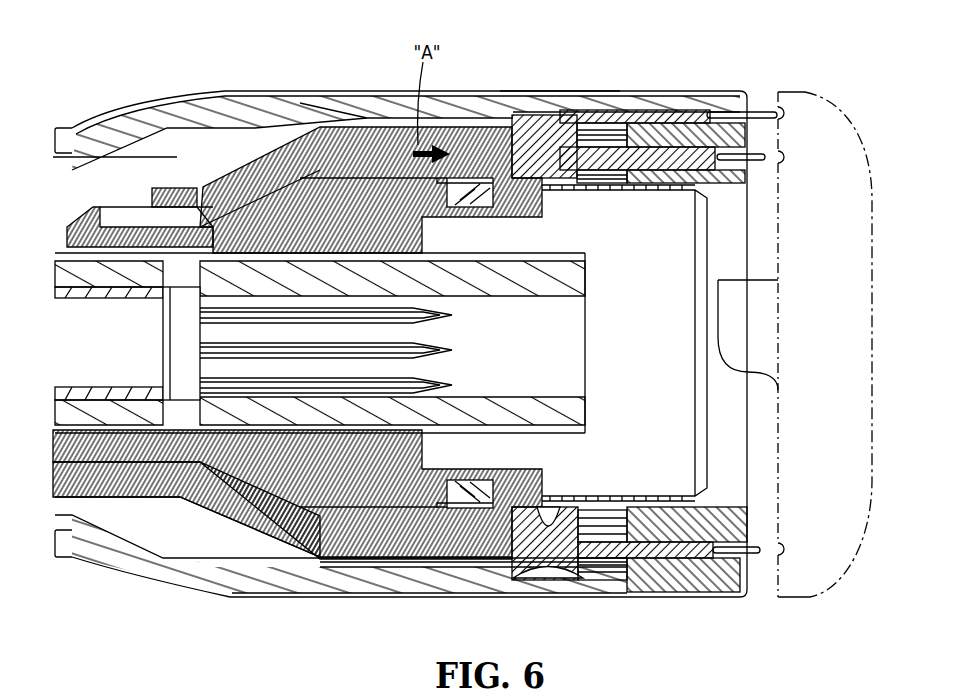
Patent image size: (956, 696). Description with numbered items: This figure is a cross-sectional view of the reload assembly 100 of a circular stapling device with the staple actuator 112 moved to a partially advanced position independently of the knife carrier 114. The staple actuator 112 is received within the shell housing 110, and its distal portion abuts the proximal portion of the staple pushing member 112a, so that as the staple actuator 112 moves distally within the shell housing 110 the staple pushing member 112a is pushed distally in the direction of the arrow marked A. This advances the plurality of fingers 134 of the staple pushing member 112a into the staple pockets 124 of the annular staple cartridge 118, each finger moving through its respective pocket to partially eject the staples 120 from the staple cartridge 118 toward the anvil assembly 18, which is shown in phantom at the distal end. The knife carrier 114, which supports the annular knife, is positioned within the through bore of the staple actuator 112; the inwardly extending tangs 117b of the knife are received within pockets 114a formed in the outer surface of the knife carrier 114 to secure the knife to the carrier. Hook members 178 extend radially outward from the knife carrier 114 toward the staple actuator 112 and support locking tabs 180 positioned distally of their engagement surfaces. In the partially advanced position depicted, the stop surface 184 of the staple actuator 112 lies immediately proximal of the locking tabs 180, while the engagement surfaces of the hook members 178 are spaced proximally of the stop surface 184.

The reload assembly 100 is at (329, 66).
The shell housing 110 is at (171, 92).
The staple actuator 112 is at (270, 130).
The staple pushing member 112a is at (554, 92).
The knife carrier 114 is at (248, 478).
The pockets 114a is at (470, 485).
The tangs 117b is at (475, 192).
The staple cartridge 118 is at (757, 577).
The staples 120 is at (762, 113).
The staple pockets 124 is at (630, 162).
The fingers 134 is at (668, 152).
The hook members 178 is at (88, 207).
The locking tabs 180 is at (200, 188).
The stop surface 184 is at (165, 190).
The anvil assembly 18 is at (880, 187).